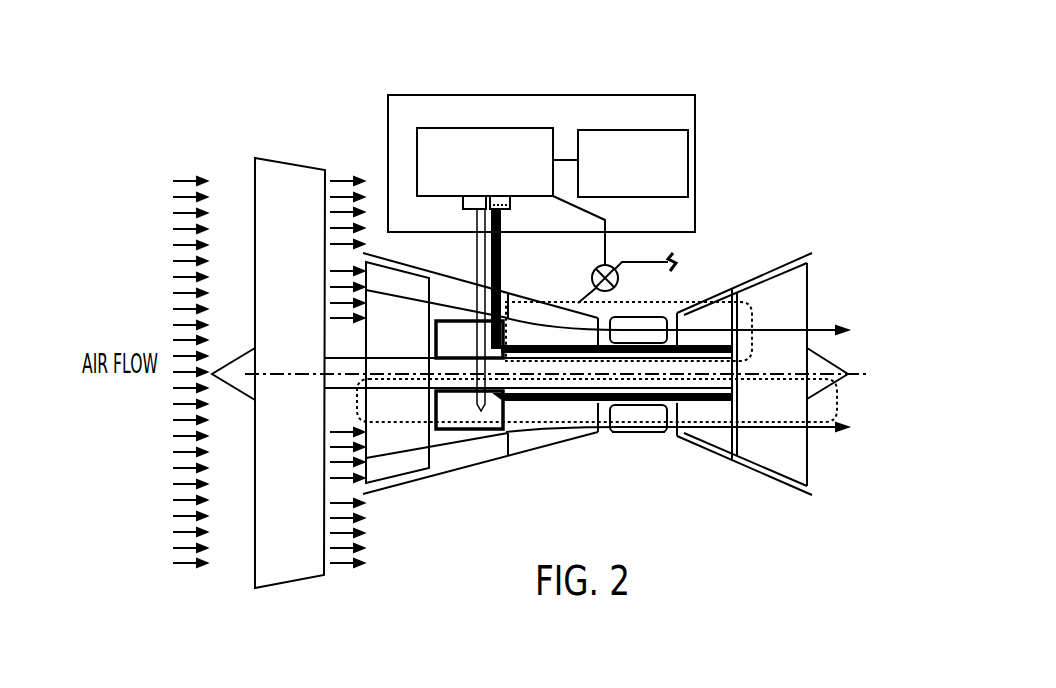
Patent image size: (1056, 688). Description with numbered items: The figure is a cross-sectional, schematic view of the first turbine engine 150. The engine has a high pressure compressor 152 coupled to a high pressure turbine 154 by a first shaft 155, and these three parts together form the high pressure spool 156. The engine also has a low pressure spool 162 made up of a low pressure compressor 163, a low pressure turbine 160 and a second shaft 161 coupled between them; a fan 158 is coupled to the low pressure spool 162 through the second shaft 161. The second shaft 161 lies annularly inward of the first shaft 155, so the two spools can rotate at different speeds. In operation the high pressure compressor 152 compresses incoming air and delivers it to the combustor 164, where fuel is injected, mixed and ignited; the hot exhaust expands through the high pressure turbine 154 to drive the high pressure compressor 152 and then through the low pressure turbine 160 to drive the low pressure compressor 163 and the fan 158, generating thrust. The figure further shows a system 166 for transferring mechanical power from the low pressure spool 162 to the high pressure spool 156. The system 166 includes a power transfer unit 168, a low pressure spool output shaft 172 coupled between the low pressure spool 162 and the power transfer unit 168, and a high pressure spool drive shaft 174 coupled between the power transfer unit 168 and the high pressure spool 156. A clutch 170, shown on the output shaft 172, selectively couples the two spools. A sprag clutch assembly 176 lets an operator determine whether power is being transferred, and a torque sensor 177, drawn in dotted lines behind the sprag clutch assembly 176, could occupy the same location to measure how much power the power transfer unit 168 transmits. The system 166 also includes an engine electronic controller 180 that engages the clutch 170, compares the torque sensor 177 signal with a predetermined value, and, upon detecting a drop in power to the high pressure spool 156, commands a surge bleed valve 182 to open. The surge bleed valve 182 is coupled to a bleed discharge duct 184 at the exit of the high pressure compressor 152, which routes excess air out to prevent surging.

The first turbine engine 150 is at (220, 82).
The high pressure compressor 152 is at (545, 290).
The high pressure turbine 154 is at (726, 288).
The first shaft 155 is at (672, 330).
The high pressure spool 156 is at (762, 308).
The fan 158 is at (271, 158).
The low pressure turbine 160 is at (768, 458).
The second shaft 161 is at (564, 417).
The low pressure spool 162 is at (850, 404).
The low pressure compressor 163 is at (406, 480).
The combustor 164 is at (636, 445).
The system for transferring mechanical power 166 is at (388, 105).
The power transfer unit 168 is at (417, 144).
The clutch 170 is at (465, 203).
The low pressure spool output shaft 172 is at (477, 262).
The high pressure spool drive shaft 174 is at (499, 278).
The sprag clutch assembly 176 is at (512, 198).
The torque sensor 177 is at (511, 209).
The engine electronic controller 180 is at (689, 152).
The surge bleed valve 182 is at (619, 284).
The bleed discharge duct 184 is at (644, 260).